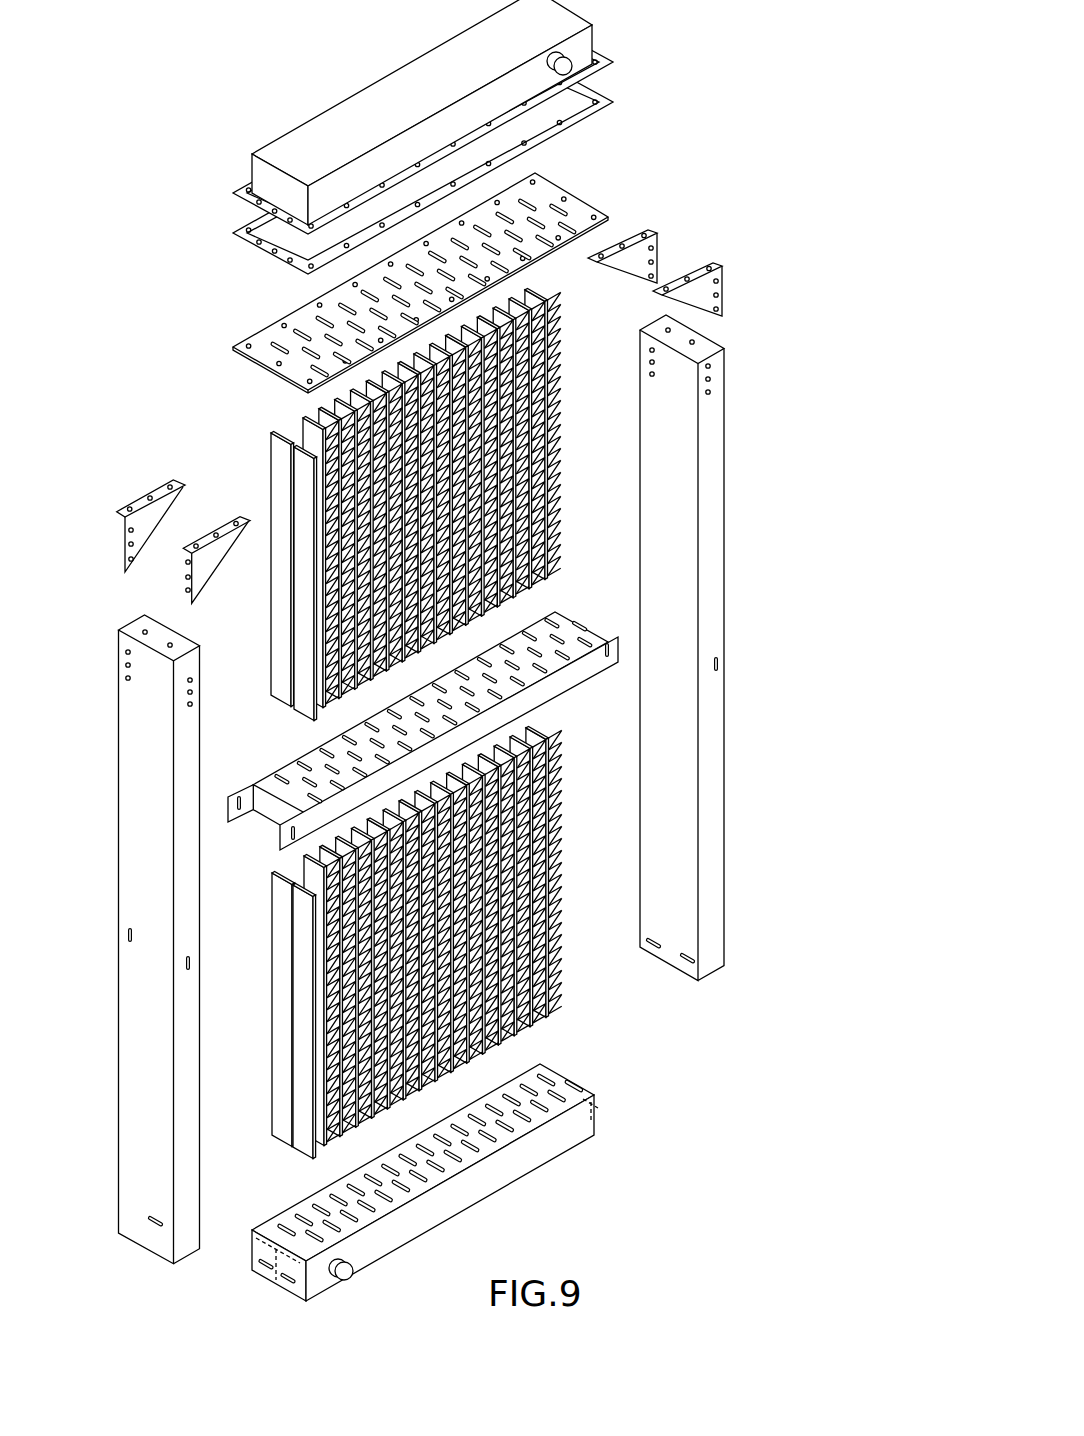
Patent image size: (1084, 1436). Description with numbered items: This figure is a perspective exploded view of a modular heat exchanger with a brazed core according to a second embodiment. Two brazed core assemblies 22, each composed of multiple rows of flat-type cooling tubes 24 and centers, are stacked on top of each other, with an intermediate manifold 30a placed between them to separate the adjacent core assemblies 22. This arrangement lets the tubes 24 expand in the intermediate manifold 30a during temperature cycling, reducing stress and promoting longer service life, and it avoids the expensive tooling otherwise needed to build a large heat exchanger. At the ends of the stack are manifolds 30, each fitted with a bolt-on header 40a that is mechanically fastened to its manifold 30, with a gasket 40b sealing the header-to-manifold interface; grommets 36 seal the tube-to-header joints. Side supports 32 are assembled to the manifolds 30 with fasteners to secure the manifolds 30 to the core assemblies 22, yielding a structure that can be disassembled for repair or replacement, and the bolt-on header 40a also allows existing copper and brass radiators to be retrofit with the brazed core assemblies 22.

The brazed core assembly 22 is at (305, 490).
The flat-type cooling tubes 24 is at (545, 291).
The manifold 30 is at (352, 118).
The intermediate manifold 30a is at (318, 750).
The side supports 32 is at (120, 665).
The grommets 36 is at (600, 1084).
The bolt-on header 40a is at (592, 198).
The gasket 40b is at (593, 118).